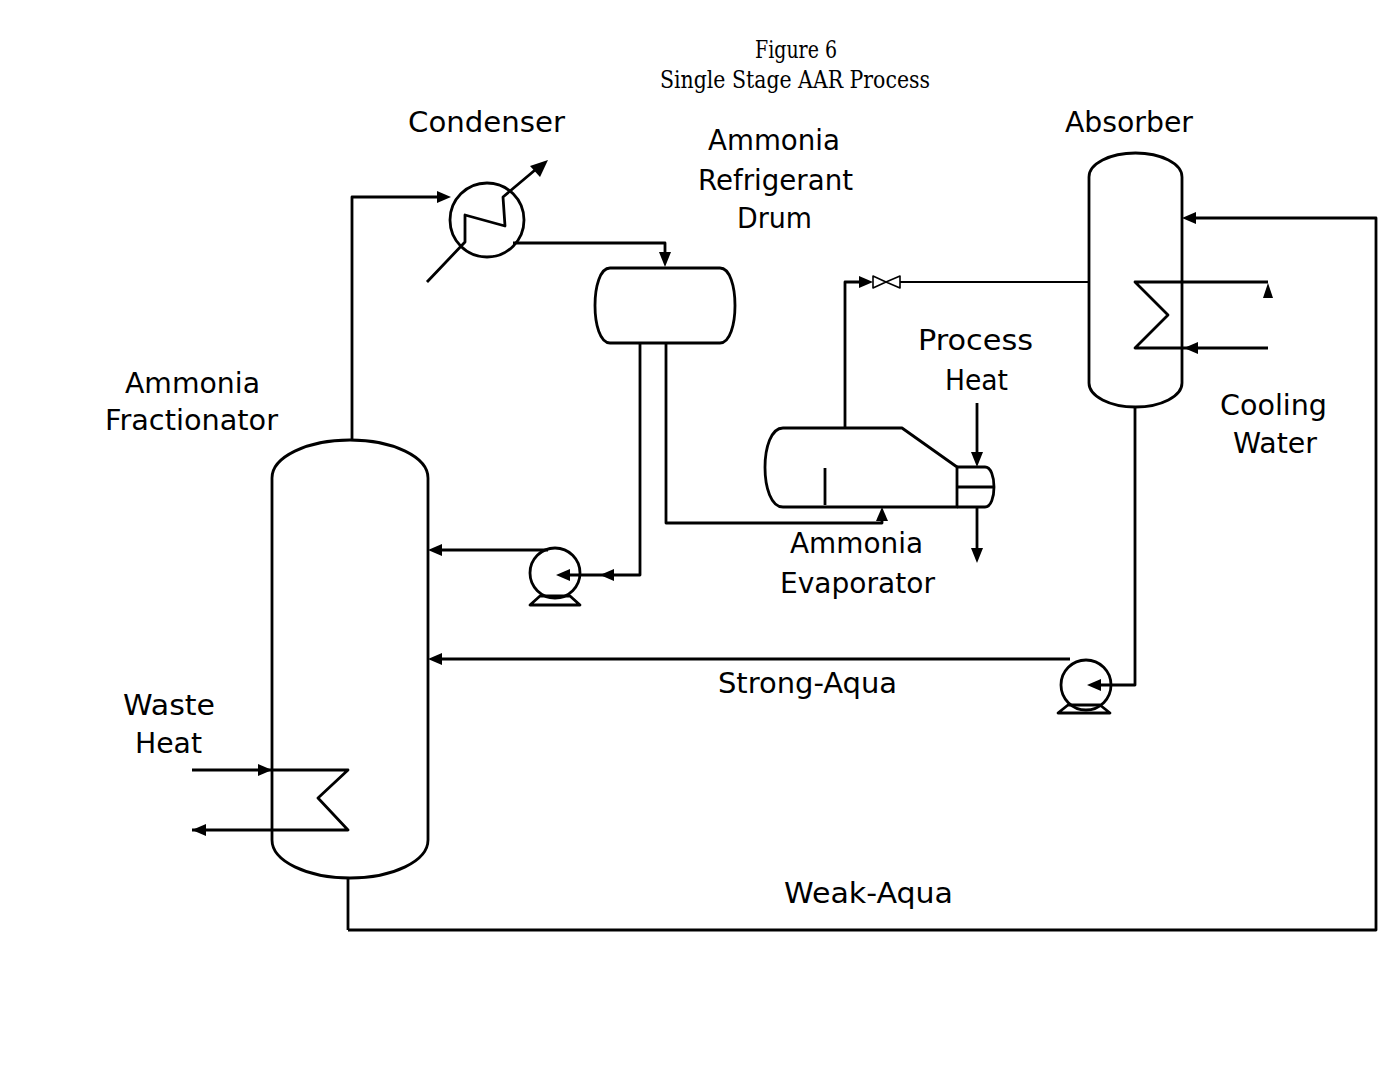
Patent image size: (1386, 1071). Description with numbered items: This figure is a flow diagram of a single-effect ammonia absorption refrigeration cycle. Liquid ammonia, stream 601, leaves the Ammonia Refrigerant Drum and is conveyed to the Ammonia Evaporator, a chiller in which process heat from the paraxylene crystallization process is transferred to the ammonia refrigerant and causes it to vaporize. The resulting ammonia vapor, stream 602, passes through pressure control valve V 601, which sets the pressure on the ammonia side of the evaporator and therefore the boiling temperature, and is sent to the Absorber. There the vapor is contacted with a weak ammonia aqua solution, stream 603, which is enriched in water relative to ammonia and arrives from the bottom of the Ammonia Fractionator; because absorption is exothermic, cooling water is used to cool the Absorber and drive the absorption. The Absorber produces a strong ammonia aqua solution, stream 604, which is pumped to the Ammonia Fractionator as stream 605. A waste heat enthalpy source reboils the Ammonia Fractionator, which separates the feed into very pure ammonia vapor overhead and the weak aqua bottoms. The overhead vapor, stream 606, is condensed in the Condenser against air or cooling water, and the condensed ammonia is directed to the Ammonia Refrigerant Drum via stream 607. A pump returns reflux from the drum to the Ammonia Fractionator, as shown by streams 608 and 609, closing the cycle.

The liquid ammonia stream 601 is at (777, 433).
The ammonia vapor stream 602 is at (967, 337).
The weak ammonia aqua solution stream 603 is at (862, 571).
The strong ammonia aqua solution stream 604 is at (1131, 549).
The strong aqua pumped stream 605 is at (749, 645).
The Ammonia Fractionator overhead vapor stream 606 is at (401, 315).
The condensed ammonia stream 607 is at (592, 239).
The reflux stream 608 is at (598, 462).
The reflux stream to fractionator 609 is at (488, 534).